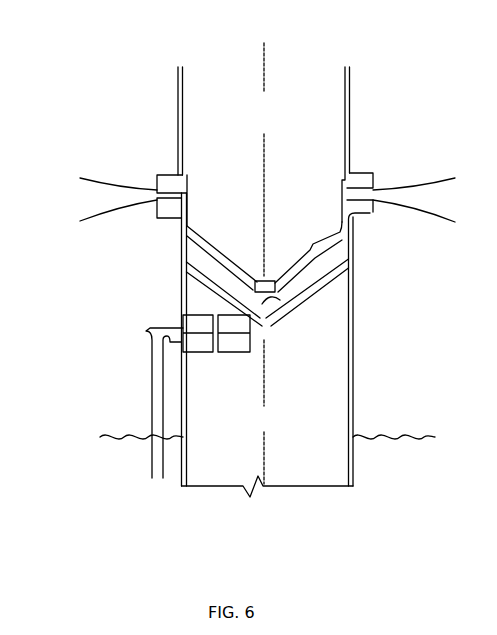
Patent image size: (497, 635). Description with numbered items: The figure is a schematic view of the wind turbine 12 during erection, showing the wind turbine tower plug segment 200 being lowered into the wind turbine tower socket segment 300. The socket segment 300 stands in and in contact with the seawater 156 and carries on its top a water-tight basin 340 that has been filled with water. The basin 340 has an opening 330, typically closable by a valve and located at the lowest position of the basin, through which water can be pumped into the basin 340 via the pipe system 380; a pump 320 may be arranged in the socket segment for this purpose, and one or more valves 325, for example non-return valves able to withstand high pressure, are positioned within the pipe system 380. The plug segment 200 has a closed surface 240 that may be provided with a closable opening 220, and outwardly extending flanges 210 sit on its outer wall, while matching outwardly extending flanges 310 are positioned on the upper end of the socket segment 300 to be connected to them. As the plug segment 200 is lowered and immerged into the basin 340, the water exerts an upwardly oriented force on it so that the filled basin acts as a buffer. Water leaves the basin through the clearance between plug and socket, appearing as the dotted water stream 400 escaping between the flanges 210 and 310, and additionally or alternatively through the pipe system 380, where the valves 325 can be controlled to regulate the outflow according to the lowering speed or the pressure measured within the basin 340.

The fuel injector assembly 12 is at (116, 96).
The wind turbine tower plug segment 200 is at (282, 123).
The flanges 210 is at (168, 172).
The water stream 400 is at (107, 207).
The flanges 310 is at (157, 211).
The opening 220 is at (268, 280).
The closed surface 240 is at (323, 247).
The opening 330 is at (273, 297).
The basin 340 is at (322, 290).
The pump 320 is at (200, 355).
The valves 325 is at (233, 355).
The pipe system 380 is at (146, 331).
The wind turbine tower socket segment 300 is at (280, 430).
The seawater 156 is at (107, 473).